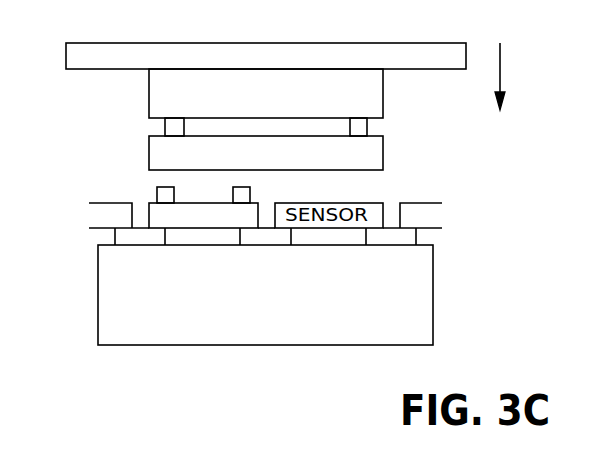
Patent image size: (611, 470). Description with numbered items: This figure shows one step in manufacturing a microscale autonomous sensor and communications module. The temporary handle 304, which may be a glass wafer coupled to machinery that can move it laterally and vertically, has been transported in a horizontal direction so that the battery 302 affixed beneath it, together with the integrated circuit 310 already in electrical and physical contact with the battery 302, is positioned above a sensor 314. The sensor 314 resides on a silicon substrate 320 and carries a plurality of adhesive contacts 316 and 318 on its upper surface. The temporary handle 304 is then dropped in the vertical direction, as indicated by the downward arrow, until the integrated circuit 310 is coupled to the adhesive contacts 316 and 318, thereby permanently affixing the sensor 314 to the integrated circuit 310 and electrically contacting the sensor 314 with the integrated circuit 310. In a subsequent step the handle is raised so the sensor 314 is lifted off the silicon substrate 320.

The battery 302 is at (383, 101).
The temporary movable handle 304 is at (157, 43).
The integrated circuit 310 is at (383, 151).
The sensor 314 is at (150, 202).
The adhesive contact 316 is at (175, 202).
The adhesive contact 318 is at (251, 202).
The silicon substrate 320 is at (433, 290).